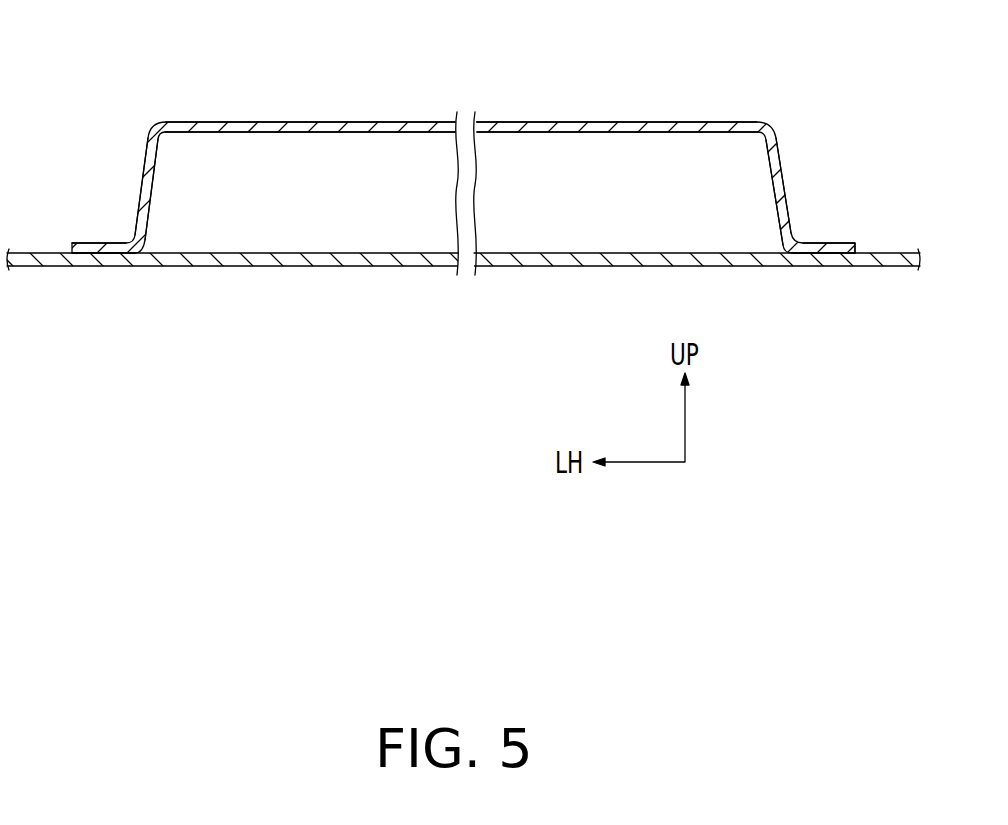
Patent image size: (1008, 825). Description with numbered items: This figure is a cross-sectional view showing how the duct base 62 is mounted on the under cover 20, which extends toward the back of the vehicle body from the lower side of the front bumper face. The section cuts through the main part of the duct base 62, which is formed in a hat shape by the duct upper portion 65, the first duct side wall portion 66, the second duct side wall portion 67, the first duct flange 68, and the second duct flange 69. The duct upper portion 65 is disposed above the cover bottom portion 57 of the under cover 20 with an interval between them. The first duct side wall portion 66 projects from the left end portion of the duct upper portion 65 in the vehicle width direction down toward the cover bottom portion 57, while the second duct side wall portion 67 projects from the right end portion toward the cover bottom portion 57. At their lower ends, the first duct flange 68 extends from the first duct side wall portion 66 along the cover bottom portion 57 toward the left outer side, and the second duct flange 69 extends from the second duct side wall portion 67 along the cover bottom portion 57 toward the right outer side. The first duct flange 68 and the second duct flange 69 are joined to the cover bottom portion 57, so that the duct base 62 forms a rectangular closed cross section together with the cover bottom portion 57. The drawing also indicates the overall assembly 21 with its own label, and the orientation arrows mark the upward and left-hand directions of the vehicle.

The bracket 21 is at (495, 153).
The duct base 62 is at (397, 123).
The duct upper portion 65 is at (584, 122).
The first duct side wall portion 66 is at (138, 182).
The second duct side wall portion 67 is at (783, 172).
The first duct flange 68 is at (98, 243).
The second duct flange 69 is at (817, 243).
The cover bottom portion 57 is at (340, 267).
The under cover 20 is at (460, 292).